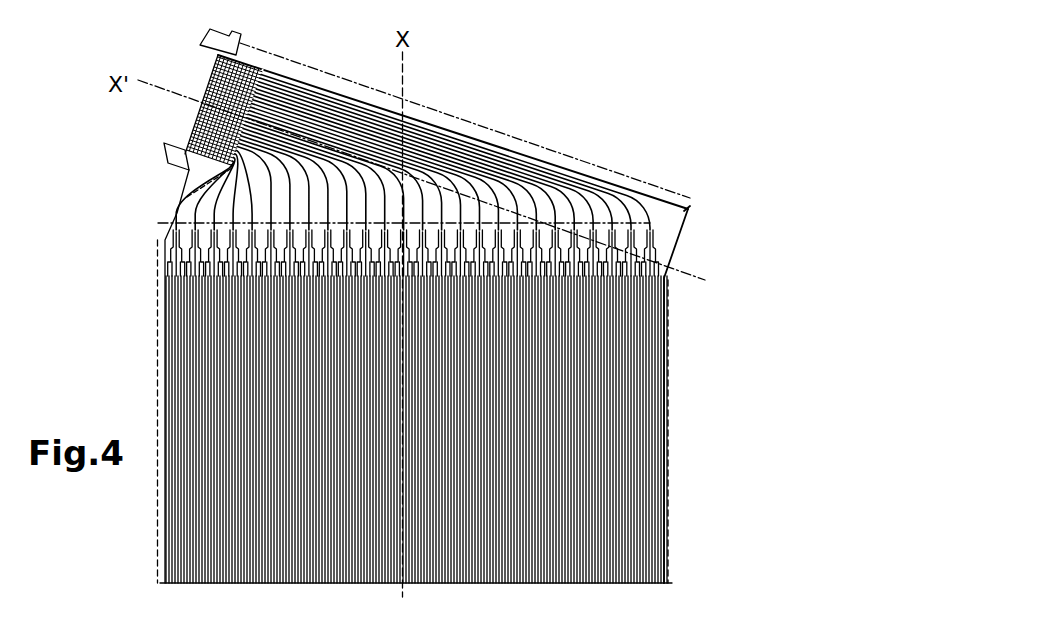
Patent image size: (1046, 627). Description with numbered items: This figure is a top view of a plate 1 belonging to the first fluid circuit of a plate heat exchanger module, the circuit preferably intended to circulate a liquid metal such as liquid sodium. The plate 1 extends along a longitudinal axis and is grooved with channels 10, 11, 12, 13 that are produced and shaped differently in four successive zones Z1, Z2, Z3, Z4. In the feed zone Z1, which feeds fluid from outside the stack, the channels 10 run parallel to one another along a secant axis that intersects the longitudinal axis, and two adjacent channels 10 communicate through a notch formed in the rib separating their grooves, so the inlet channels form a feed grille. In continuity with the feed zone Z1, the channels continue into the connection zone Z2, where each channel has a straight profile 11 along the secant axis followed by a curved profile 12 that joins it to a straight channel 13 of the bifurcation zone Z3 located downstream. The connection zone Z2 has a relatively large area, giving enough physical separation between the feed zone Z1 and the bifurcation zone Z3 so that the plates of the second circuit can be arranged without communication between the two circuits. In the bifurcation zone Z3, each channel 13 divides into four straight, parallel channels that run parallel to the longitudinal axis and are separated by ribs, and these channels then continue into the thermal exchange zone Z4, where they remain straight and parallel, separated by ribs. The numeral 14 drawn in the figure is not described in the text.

The plate 1 is at (165, 151).
The channels 10 is at (197, 119).
The straight profile 11 is at (563, 173).
The curved profile 12 is at (622, 213).
The channel 13 is at (637, 261).
The straight tube bundle 14 is at (192, 524).
The feed zone Z1 is at (268, 56).
The connection zone Z2 is at (500, 131).
The bifurcation zone Z3 is at (166, 237).
The thermal exchange zone Z4 is at (668, 360).